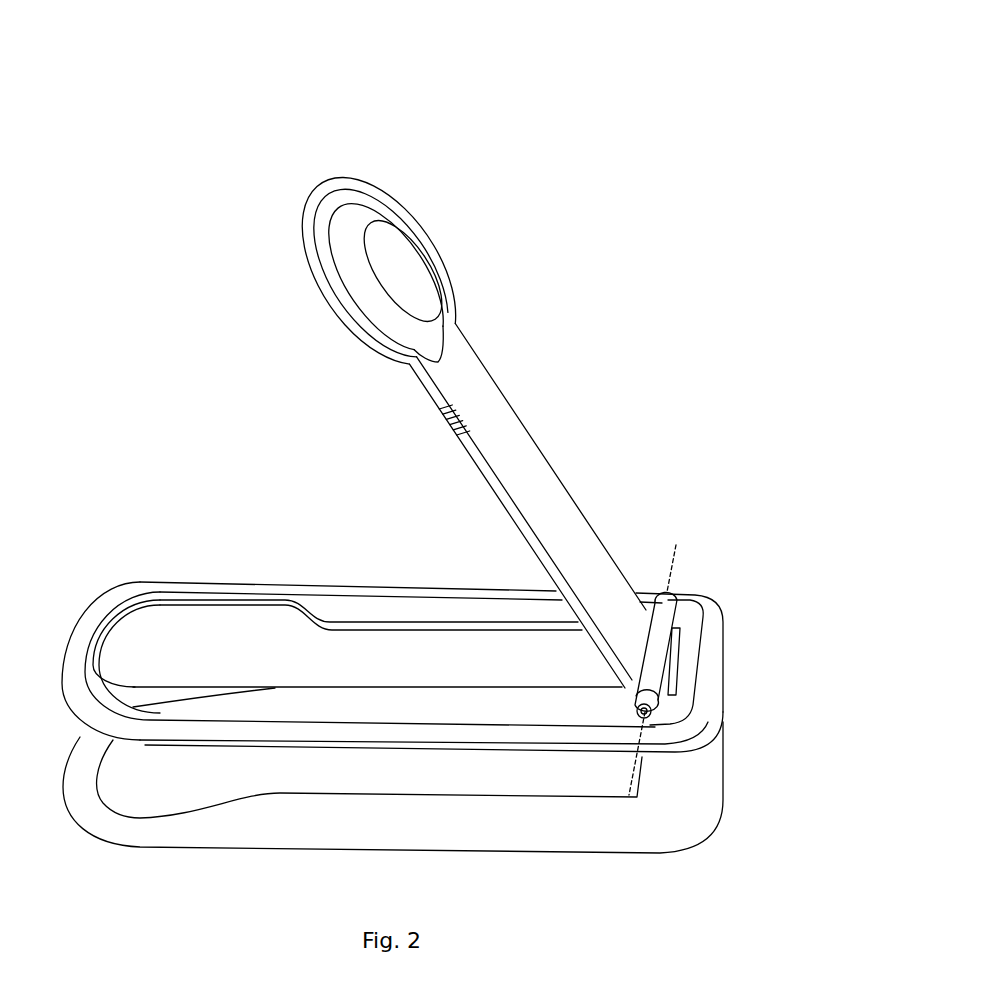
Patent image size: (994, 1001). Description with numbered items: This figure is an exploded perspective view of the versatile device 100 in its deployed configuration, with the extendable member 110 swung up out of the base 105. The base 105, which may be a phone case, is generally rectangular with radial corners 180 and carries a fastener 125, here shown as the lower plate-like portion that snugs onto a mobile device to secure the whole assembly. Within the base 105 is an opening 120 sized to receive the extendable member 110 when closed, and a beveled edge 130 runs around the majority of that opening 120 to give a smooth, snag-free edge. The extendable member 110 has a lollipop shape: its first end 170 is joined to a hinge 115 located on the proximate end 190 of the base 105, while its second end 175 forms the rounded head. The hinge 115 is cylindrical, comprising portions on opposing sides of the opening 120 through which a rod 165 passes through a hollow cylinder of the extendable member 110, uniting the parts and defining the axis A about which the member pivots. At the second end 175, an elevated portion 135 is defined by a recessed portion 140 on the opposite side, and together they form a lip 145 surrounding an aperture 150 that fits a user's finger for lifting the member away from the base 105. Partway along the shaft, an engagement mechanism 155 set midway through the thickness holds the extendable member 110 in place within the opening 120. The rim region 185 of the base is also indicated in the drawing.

The versatile device 100 is at (660, 98).
The base 105 is at (446, 620).
The extendable member 110 is at (520, 463).
The hinge 115 is at (665, 600).
The opening 120 is at (412, 660).
The fastener 125 is at (465, 830).
The beveled edge 130 is at (218, 731).
The elevated portion 135 is at (382, 295).
The recessed portion 140 is at (425, 277).
The lip 145 is at (378, 215).
The aperture 150 is at (385, 258).
The engagement mechanism 155 is at (462, 430).
The rod 165 is at (648, 710).
The first end 170 is at (634, 632).
The second end 175 is at (342, 180).
The radial corners 180 is at (690, 734).
The tray rim 185 is at (100, 643).
The proximate end 190 is at (707, 637).